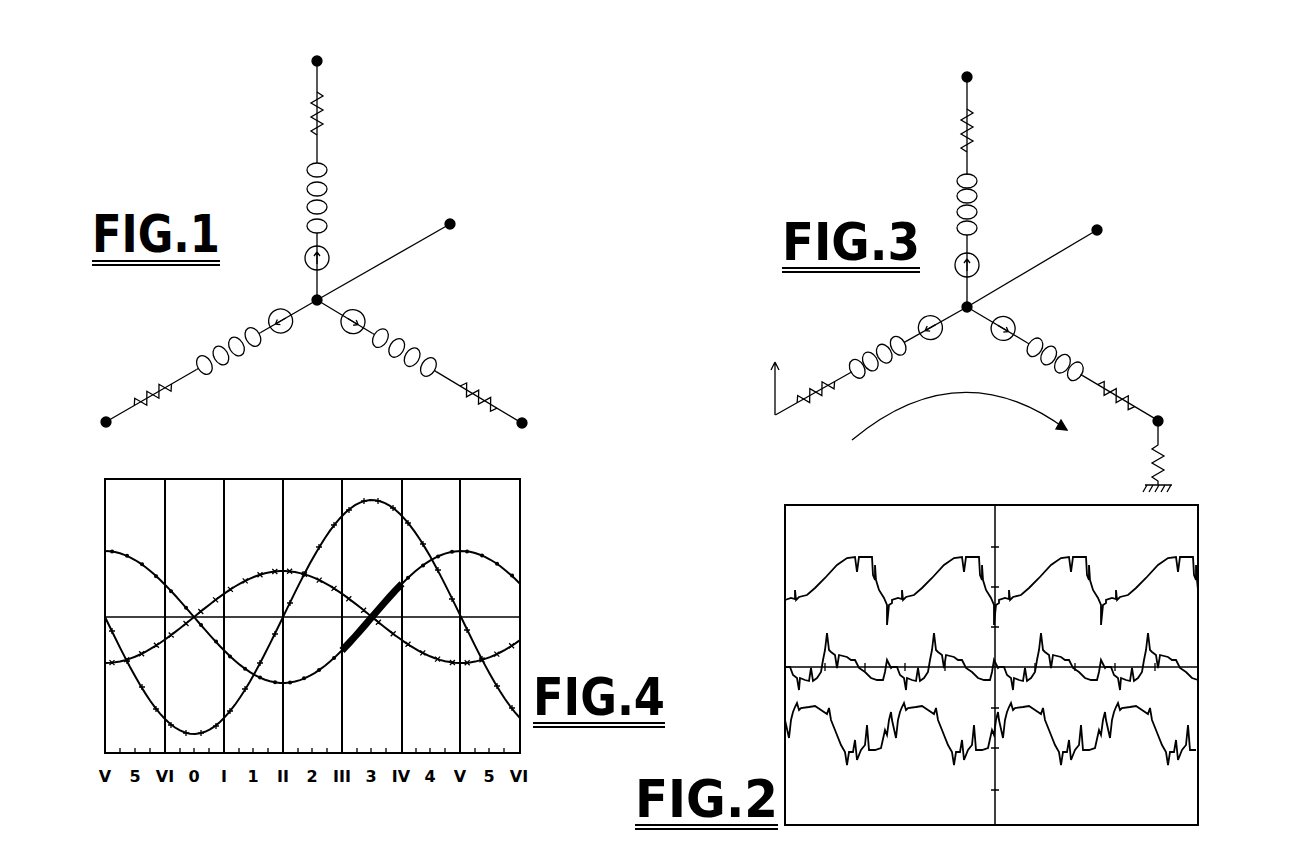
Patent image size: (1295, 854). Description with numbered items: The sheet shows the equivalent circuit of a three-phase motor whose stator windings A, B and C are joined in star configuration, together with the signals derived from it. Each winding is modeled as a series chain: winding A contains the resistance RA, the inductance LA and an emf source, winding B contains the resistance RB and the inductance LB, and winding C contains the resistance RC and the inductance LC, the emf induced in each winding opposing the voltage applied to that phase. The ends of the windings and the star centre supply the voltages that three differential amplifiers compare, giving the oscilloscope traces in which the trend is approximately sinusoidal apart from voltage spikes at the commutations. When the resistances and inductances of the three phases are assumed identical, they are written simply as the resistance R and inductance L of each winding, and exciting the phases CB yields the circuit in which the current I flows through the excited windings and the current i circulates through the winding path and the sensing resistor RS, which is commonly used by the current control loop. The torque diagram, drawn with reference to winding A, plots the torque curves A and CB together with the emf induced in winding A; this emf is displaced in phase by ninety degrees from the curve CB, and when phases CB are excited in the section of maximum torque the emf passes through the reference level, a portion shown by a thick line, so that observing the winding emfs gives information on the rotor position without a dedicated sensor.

In FIG. 1, the winding A is at (287, 180).
In FIG. 3, the winding A is at (943, 192).
In FIG. 4, the winding A is at (312, 603).
In FIG. 1, the winding B is at (419, 361).
In FIG. 3, the winding B is at (1063, 364).
In FIG. 1, the winding C is at (211, 361).
In FIG. 3, the winding C is at (871, 361).
In FIG. 1, the resistance of winding A RA is at (335, 113).
In FIG. 1, the resistance of winding B RB is at (482, 387).
In FIG. 1, the resistance of winding C RC is at (158, 409).
In FIG. 1, the inductance of winding A LA is at (331, 198).
In FIG. 1, the inductance of winding B LB is at (405, 350).
In FIG. 1, the inductance of winding C LC is at (229, 361).
In FIG. 3, the winding resistance R is at (963, 266).
In FIG. 3, the winding inductance L is at (966, 282).
In FIG. 3, the sensing resistor RS is at (1142, 456).
In FIG. 3, the phase current I is at (763, 386).
In FIG. 3, the current i is at (959, 416).
In FIG. 4, the C-B torque curve CB is at (332, 491).